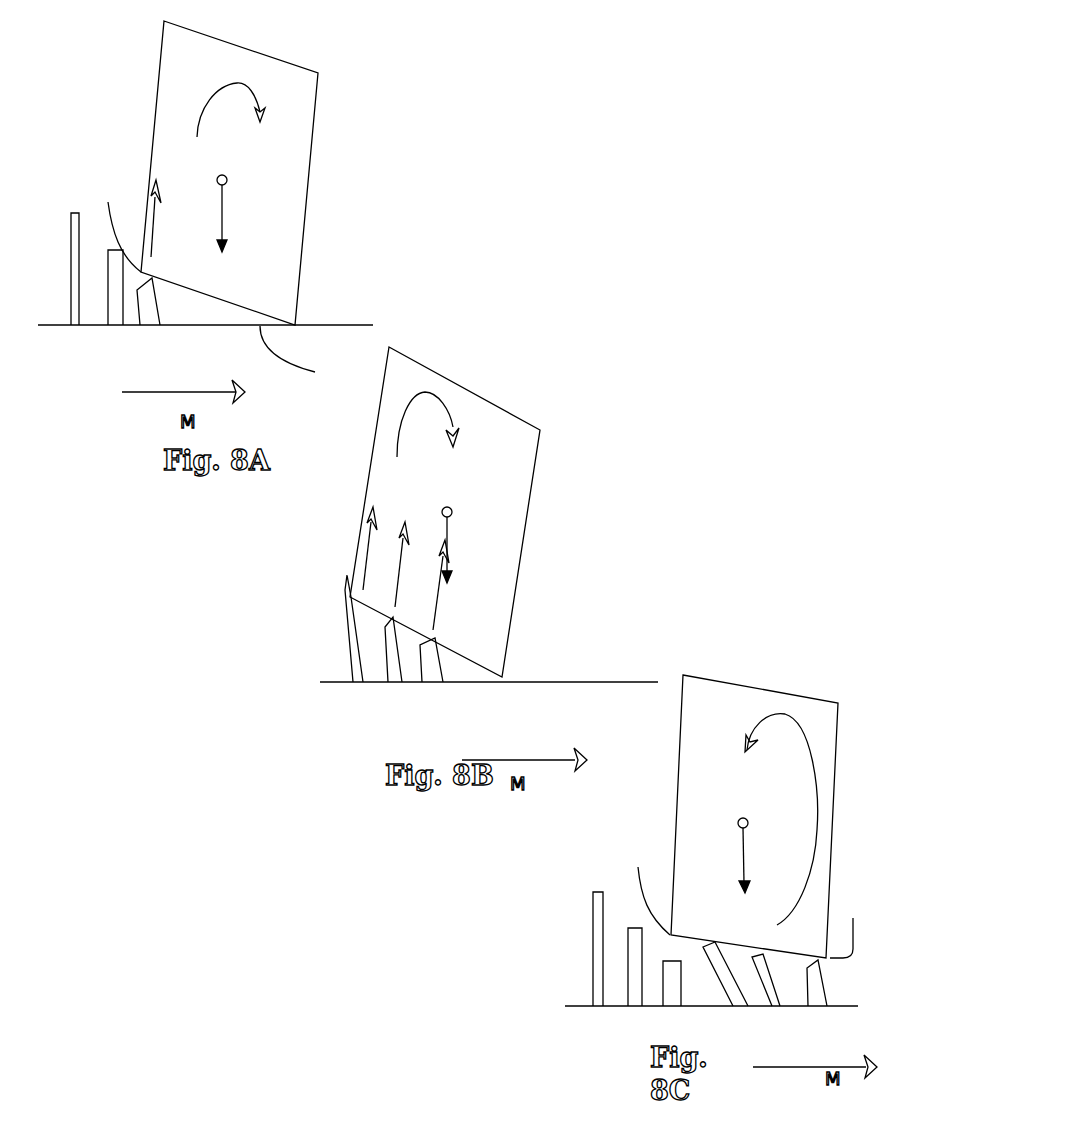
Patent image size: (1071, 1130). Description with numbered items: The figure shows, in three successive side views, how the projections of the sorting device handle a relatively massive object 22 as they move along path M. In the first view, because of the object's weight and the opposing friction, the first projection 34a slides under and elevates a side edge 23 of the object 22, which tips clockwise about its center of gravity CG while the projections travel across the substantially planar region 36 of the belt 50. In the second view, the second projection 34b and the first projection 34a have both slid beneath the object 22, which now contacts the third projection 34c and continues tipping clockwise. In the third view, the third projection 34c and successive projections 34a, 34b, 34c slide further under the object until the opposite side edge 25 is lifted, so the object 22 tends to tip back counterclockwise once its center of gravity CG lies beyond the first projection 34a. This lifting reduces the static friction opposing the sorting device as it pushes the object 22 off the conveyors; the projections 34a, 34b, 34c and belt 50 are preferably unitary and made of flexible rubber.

In FIG. 8A, the object 22 is at (302, 132).
In FIG. 8B, the object 22 is at (517, 490).
In FIG. 8C, the object 22 is at (778, 690).
In FIG. 8A, the side edge 23 is at (119, 227).
In FIG. 8C, the side edge 23 is at (648, 890).
In FIG. 8C, the side edge 25 is at (845, 927).
In FIG. 8A, the first projection 34a is at (150, 317).
In FIG. 8B, the first projection 34a is at (442, 680).
In FIG. 8C, the first projection 34a is at (823, 983).
In FIG. 8A, the second projection 34b is at (115, 312).
In FIG. 8B, the second projection 34b is at (402, 670).
In FIG. 8C, the second projection 34b is at (780, 992).
In FIG. 8A, the third projection 34c is at (75, 323).
In FIG. 8B, the third projection 34c is at (362, 682).
In FIG. 8C, the third projection 34c is at (740, 1000).
In FIG. 8A, the substantially planar region 36 is at (348, 325).
In FIG. 8B, the substantially planar region 36 is at (563, 682).
In FIG. 8A, the belt 50 is at (303, 356).